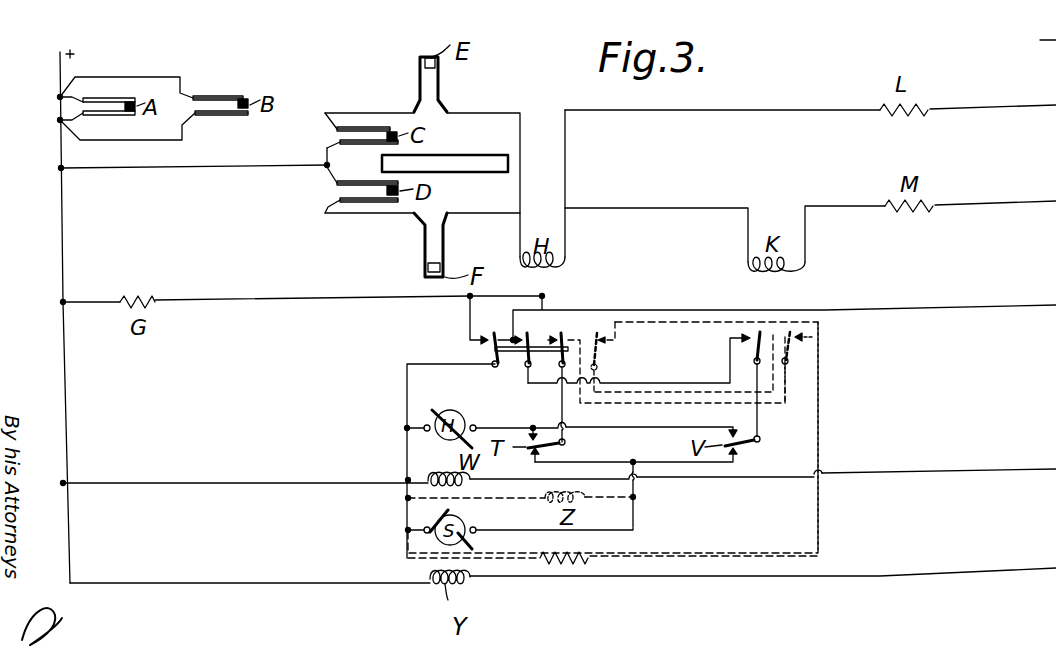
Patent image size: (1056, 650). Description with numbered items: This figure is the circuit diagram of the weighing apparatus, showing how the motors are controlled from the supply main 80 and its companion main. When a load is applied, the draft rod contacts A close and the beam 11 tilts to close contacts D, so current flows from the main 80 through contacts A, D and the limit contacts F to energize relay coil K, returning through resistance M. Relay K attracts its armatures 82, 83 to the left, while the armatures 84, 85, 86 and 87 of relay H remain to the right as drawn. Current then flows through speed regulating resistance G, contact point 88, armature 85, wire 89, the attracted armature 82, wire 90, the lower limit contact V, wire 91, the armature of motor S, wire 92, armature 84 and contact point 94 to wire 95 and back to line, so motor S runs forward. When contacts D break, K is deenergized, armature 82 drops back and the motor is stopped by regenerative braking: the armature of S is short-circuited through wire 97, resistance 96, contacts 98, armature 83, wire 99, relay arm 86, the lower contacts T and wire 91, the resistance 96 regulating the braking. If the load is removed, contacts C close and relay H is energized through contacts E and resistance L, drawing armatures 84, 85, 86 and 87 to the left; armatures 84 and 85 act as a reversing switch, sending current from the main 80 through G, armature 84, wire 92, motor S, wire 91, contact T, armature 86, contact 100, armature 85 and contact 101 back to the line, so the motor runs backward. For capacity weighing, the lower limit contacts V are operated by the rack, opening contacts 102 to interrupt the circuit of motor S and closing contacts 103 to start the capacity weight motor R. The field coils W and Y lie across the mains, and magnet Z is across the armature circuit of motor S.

The supply main 80 is at (45, 315).
The beam 11 is at (468, 152).
The relay armature 82 is at (756, 348).
The relay armature 83 is at (790, 348).
The relay armature 84 is at (494, 349).
The relay armature 85 is at (523, 353).
The relay arm 86 is at (563, 345).
The relay armature 87 is at (603, 355).
The contact point 88 is at (533, 340).
The wire 89 is at (657, 380).
The wire 90 is at (760, 423).
The wire 91 is at (636, 487).
The wire 92 is at (405, 410).
The contact point 94 is at (505, 338).
The wire 95 is at (825, 308).
The resistance 96 is at (563, 563).
The wire 97 is at (495, 562).
The contacts 98 is at (800, 333).
The wire 99 is at (815, 399).
The contact 100 is at (548, 338).
The contact 101 is at (517, 342).
The contacts 102 is at (737, 448).
The contacts 103 is at (743, 418).